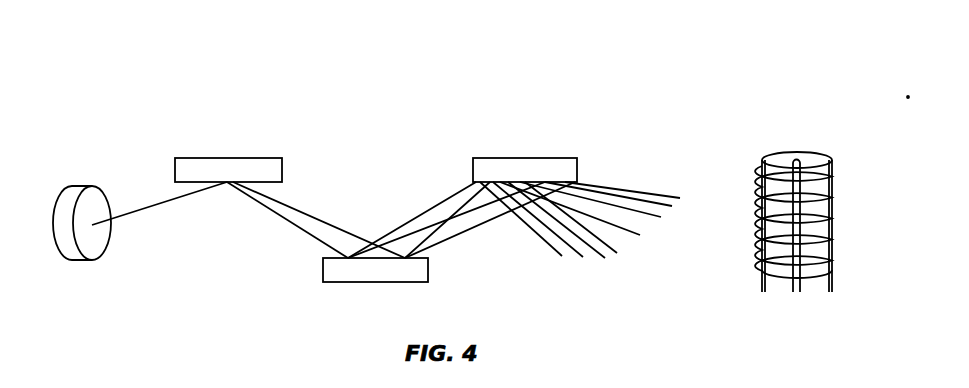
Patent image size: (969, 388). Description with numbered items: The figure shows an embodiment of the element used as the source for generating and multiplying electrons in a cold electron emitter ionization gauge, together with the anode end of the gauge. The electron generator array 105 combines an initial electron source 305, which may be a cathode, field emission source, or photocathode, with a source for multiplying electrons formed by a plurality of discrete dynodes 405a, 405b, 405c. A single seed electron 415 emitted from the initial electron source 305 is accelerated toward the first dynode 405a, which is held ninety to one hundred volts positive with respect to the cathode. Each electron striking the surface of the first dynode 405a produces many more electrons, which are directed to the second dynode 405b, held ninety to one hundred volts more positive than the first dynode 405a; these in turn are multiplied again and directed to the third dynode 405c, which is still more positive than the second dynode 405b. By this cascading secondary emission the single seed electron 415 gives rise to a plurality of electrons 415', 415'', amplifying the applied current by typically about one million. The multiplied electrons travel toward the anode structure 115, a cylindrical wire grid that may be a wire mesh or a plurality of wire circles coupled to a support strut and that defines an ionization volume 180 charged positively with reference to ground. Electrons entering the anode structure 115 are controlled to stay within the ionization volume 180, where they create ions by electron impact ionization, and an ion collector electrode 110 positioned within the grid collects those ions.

The electron generator array 105 is at (115, 143).
The initial electron source 305 is at (87, 187).
The first dynode 405a is at (228, 158).
The second dynode 405b is at (378, 282).
The third dynode 405c is at (527, 158).
The seed electron 415 is at (159, 212).
The multiplied electrons 415' is at (316, 220).
The multiplied electrons 415'' is at (570, 233).
The ionization volume 180 is at (778, 161).
The ion collector electrode 110 is at (798, 160).
The anode structure 115 is at (810, 278).